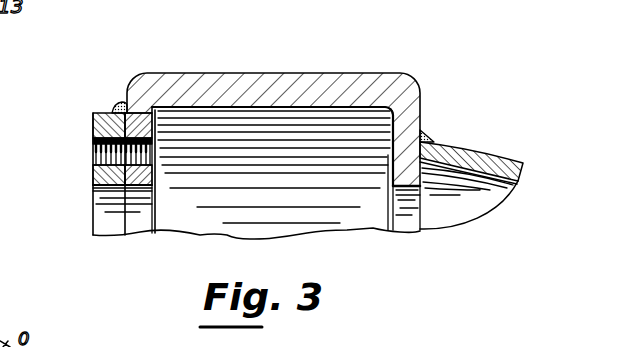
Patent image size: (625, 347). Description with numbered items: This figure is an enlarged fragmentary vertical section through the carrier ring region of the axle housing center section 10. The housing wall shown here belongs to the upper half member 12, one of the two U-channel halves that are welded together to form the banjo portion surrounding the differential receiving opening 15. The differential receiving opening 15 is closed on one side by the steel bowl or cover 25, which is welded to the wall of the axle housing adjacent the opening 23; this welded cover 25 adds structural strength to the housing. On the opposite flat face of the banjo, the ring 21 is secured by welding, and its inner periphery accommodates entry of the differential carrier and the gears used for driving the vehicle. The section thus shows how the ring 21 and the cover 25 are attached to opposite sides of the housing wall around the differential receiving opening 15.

The axle housing center section 10 is at (305, 65).
The upper half member 12 is at (205, 73).
The differential receiving opening 15 is at (138, 188).
The ring 21 is at (103, 127).
The opening 23 is at (407, 188).
The bowl or cover 25 is at (466, 141).